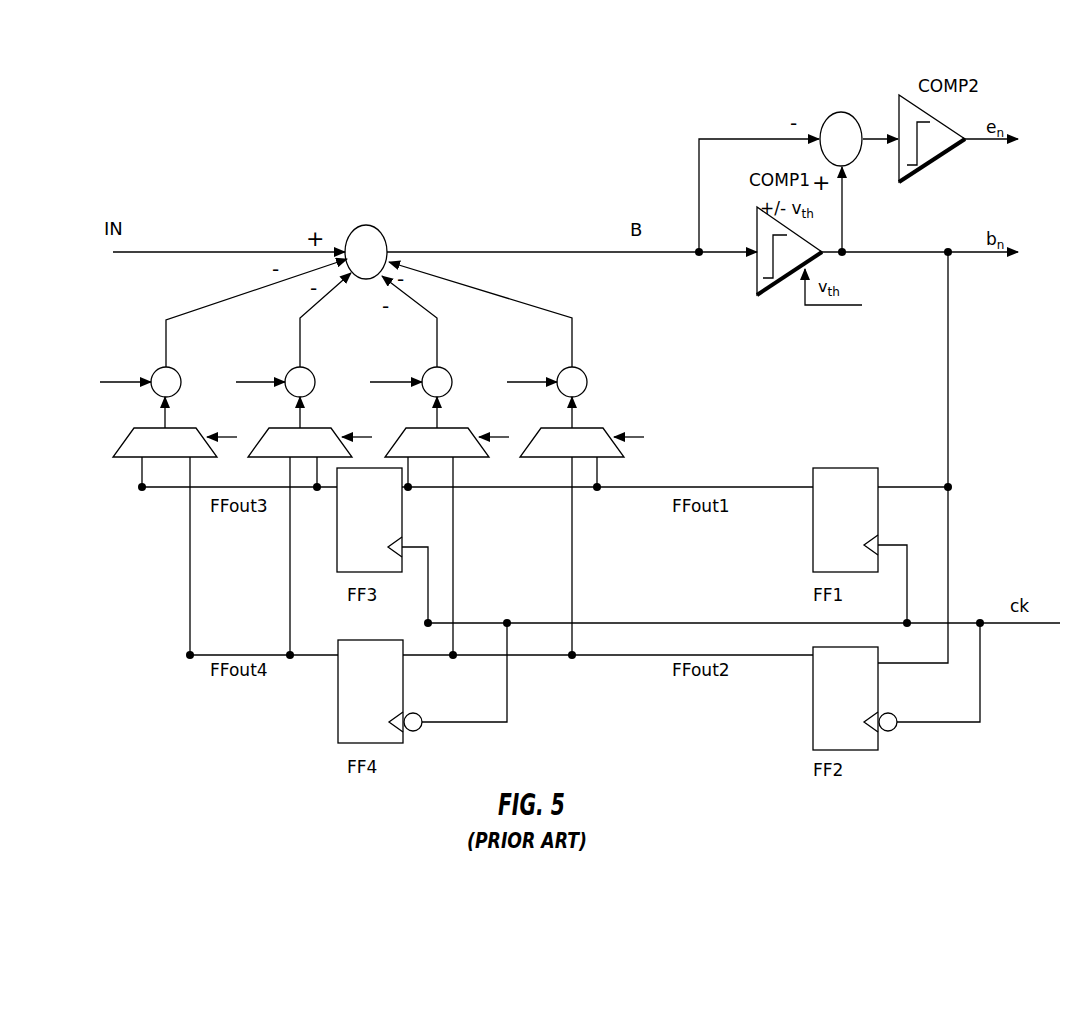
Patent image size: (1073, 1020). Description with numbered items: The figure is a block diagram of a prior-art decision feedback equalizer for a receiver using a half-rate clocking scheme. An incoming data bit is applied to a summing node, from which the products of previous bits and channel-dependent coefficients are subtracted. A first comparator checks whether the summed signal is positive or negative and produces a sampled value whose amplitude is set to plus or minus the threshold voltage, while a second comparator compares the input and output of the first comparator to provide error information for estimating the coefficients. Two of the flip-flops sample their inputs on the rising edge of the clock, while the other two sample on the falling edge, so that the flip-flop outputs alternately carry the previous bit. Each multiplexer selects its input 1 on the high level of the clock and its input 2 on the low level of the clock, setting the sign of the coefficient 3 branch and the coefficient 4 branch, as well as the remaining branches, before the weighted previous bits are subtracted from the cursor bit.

The multiplexer input 1 is at (518, 458).
The multiplexer input 2 is at (431, 465).
The coefficient C3 branch (multiplier and sign multiplexer) 3 is at (298, 464).
The coefficient C4 branch (multiplier and sign multiplexer) 4 is at (215, 457).